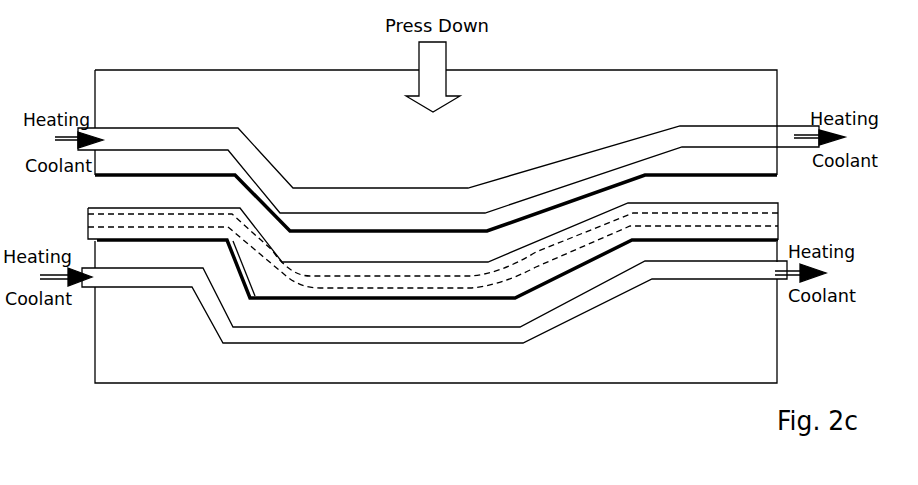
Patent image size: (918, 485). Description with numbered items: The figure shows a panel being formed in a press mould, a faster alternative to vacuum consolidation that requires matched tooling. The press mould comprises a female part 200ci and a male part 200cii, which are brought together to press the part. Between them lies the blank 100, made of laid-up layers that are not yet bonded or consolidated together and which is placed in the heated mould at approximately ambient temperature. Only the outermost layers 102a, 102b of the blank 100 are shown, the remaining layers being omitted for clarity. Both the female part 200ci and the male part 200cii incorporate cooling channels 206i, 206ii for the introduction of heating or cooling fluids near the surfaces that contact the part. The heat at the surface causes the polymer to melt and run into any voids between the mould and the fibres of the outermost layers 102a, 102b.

The male part 200cii is at (583, 145).
The female part 200ci is at (702, 340).
The cooling channel 206ii is at (128, 130).
The cooling channel 206i is at (270, 343).
The blank 100 is at (755, 203).
The outermost layer 102a is at (762, 213).
The outermost layer 102b is at (763, 228).